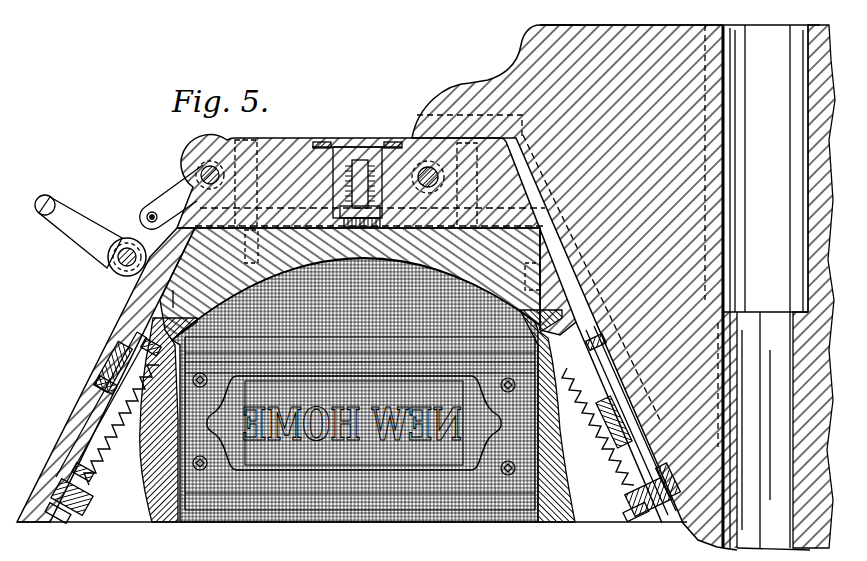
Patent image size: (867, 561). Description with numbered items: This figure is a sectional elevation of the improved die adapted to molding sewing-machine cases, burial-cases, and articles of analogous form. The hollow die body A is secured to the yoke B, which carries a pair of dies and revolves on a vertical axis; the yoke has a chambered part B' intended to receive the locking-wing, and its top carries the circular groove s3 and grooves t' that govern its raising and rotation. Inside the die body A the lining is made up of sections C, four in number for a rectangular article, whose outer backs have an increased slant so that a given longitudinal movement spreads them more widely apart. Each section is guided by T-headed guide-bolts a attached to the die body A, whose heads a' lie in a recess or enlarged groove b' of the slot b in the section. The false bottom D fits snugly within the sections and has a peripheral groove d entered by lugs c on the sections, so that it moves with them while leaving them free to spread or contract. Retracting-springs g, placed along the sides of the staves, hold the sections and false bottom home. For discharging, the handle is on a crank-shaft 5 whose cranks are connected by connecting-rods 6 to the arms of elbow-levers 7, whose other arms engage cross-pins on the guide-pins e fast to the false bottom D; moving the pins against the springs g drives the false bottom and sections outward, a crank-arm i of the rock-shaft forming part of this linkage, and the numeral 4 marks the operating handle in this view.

The die body A is at (419, 329).
The yoke B is at (574, 287).
The chambered part of the yoke B' is at (687, 287).
The lining sections or staves C is at (354, 406).
The false bottom D is at (350, 284).
The hand lever 4 is at (78, 231).
The crank-shaft 5 is at (123, 276).
The connecting-rods 6 is at (271, 185).
The elbow-levers 7 is at (350, 184).
The guide-pins e is at (348, 255).
The T-headed guide-bolts a is at (327, 418).
The heads of the guide-bolts a' is at (368, 386).
The guide-slot b is at (358, 415).
The recess or enlarged groove b' is at (112, 439).
The lugs on the sections c is at (631, 458).
The peripheral groove d is at (667, 471).
The retracting-springs g is at (359, 425).
The crank-arm i is at (69, 501).
The grooves t' is at (763, 430).
The circular groove s3 is at (563, 14).